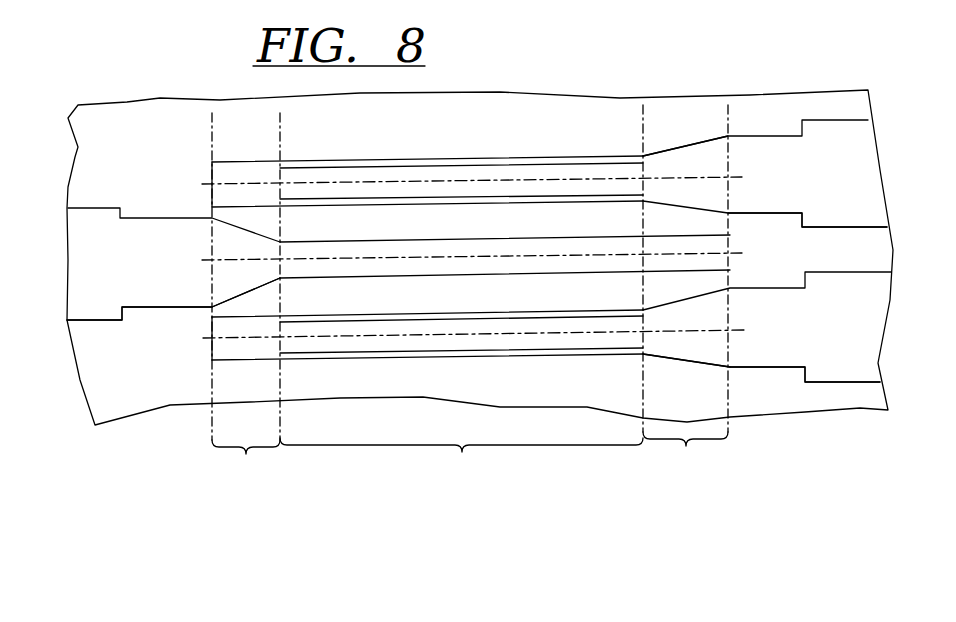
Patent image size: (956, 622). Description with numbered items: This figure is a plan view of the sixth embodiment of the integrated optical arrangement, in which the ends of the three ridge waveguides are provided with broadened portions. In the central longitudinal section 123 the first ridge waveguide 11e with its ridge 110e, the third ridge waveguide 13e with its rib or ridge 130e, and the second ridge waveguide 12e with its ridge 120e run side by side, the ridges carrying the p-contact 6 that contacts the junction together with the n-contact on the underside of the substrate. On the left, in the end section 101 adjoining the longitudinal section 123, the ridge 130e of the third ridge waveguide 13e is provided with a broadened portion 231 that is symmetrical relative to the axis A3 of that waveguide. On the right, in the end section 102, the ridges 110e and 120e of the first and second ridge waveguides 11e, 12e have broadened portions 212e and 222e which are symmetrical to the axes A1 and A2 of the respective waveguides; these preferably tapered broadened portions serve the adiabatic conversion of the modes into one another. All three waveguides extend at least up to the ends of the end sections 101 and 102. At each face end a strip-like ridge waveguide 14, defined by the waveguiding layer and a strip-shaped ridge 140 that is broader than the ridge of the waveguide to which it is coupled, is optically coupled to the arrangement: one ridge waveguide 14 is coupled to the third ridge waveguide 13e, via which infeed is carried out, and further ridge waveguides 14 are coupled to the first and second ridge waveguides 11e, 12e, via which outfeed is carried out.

The strip-shaped ridge 140 is at (85, 208).
The strip-like ridge waveguide 14 is at (90, 328).
The ridge of first ridge waveguide 110e is at (302, 160).
The first ridge waveguide 11e is at (473, 150).
The axis of first ridge waveguide A1 is at (507, 173).
The broadened portion 212e is at (667, 150).
The ridge of third ridge waveguide 130e is at (316, 243).
The third ridge waveguide 13e is at (425, 236).
The axis of third ridge waveguide A3 is at (503, 253).
The ridge of second ridge waveguide 120e is at (318, 318).
The second ridge waveguide 12e is at (428, 310).
The axis of second ridge waveguide A2 is at (555, 332).
The p-contact 6 is at (408, 173).
The broadened portion 222e is at (683, 348).
The broadened portion 231 is at (222, 290).
The end section 101 is at (246, 463).
The longitudinal section 123 is at (461, 461).
The end section 102 is at (685, 455).